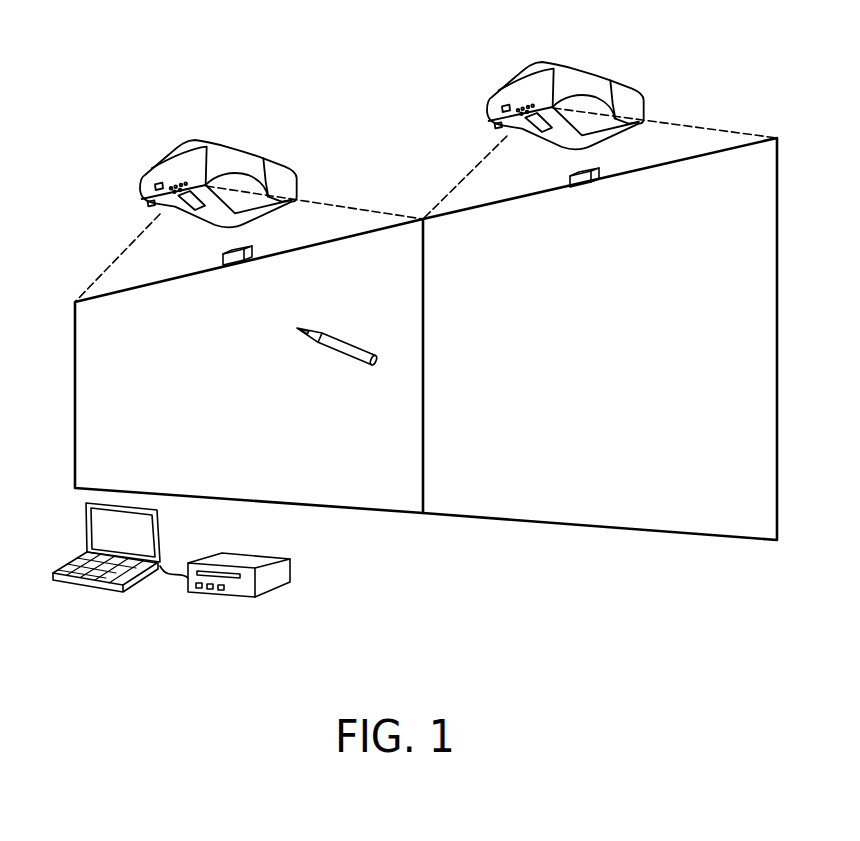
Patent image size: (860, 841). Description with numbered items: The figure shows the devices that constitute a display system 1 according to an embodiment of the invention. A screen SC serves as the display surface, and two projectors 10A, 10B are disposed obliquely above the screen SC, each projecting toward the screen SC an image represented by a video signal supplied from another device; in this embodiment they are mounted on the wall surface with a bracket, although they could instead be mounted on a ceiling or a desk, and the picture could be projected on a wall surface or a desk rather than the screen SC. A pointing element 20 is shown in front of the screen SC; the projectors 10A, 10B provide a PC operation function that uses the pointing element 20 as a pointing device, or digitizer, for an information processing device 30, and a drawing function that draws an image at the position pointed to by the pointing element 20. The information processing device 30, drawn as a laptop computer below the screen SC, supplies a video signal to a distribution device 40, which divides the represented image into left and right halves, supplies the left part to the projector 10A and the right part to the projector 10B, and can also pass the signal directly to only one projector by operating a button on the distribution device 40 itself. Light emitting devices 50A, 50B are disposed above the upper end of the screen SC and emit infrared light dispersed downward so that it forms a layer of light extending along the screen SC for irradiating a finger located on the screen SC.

The display system 1 is at (125, 193).
The projector 10A is at (272, 133).
The projector 10B is at (490, 112).
The pointing element 20 is at (319, 331).
The information processing device 30 is at (84, 558).
The distribution device 40 is at (240, 554).
The light emitting device 50A is at (221, 259).
The light emitting device 50B is at (569, 181).
The screen SC is at (75, 372).